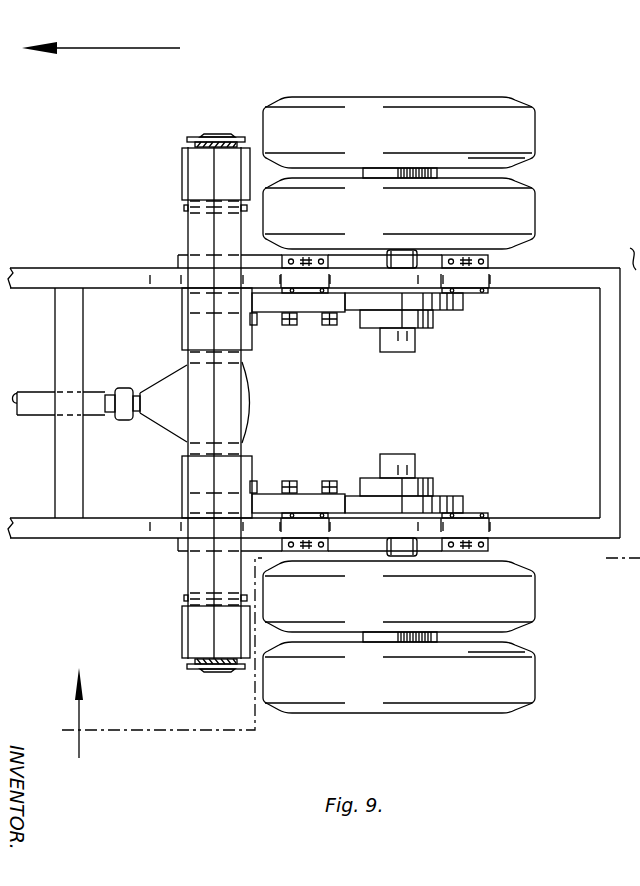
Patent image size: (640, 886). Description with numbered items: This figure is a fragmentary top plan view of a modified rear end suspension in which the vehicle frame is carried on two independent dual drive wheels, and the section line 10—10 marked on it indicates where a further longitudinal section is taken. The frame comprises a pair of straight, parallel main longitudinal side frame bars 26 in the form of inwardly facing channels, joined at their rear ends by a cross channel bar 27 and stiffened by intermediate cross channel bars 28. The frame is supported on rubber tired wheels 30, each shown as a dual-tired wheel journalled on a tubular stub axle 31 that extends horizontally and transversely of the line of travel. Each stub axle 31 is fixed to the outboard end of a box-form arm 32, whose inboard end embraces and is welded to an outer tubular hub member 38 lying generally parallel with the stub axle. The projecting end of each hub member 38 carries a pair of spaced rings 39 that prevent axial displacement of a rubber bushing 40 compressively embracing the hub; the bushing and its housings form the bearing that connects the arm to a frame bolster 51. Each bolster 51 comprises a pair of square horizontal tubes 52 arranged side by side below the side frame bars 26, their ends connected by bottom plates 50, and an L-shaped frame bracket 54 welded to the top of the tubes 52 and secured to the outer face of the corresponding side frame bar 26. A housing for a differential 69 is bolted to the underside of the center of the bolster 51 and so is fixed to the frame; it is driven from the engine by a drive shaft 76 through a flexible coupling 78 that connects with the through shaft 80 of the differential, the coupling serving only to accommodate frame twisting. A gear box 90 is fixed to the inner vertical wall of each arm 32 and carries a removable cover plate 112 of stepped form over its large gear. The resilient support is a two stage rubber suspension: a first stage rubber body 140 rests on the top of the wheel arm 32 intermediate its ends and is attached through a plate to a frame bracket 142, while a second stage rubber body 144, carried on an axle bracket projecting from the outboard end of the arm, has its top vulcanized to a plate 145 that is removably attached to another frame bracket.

The vehicle direction arrow 10 is at (339, 663).
The main longitudinal side frame bars 26 is at (28, 518).
The cross channel bar 27 is at (602, 406).
The intermediate cross channel bars 28 is at (63, 342).
The rubber tired wheels 30 is at (492, 80).
The tubular stub axle 31 is at (388, 558).
The arm 32 is at (362, 256).
The outer tubular hub member 38 is at (218, 133).
The spaced rings 39 is at (195, 137).
The rubber bushing 40 is at (195, 144).
The bottom plate 50 is at (182, 160).
The frame bolster 51 is at (174, 581).
The horizontal tubes 52 is at (228, 226).
The L-shaped frame bracket 54 is at (146, 263).
The differential 69 is at (260, 392).
The drive shaft 76 is at (630, 246).
The flexible coupling 78 is at (128, 388).
The through shaft 80 is at (137, 413).
The gear box 90 is at (315, 320).
The removable cover plate 112 is at (436, 325).
The rubber body 140 is at (294, 254).
The frame bracket 142 is at (342, 254).
The second stage rubber body 144 is at (496, 226).
The plate 145 is at (492, 263).